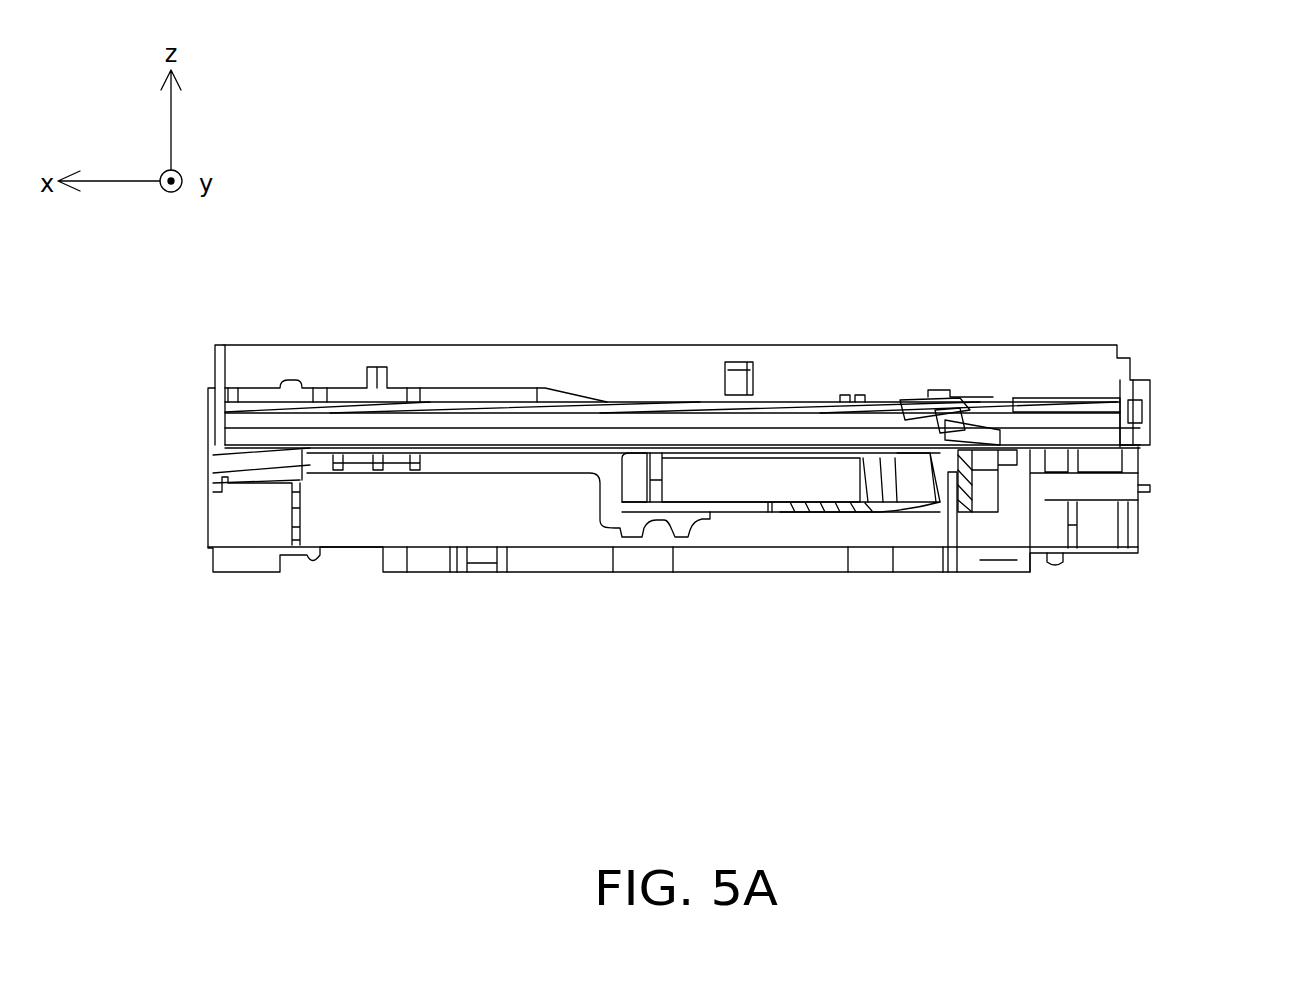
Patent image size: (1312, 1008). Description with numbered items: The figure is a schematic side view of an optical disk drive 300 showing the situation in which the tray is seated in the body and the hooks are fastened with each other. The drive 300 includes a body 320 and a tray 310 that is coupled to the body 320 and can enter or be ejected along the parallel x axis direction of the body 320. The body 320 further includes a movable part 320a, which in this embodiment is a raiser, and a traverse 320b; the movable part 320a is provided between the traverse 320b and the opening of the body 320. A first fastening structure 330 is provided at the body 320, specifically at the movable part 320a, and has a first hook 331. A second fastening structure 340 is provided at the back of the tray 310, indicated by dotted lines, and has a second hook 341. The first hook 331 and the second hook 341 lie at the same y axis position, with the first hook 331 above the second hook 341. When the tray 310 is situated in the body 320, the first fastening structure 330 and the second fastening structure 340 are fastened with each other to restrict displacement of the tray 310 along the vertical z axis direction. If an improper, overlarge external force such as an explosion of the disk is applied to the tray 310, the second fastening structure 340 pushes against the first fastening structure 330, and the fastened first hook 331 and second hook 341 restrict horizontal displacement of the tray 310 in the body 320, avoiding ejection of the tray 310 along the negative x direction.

The optical disk drive 300 is at (1132, 128).
The tray 310 is at (679, 372).
The body 320 is at (541, 601).
The movable part 320a is at (960, 512).
The traverse 320b is at (752, 535).
The first fastening structure 330 is at (1010, 427).
The first hook 331 is at (957, 440).
The second fastening structure 340 is at (980, 440).
The second hook 341 is at (950, 440).